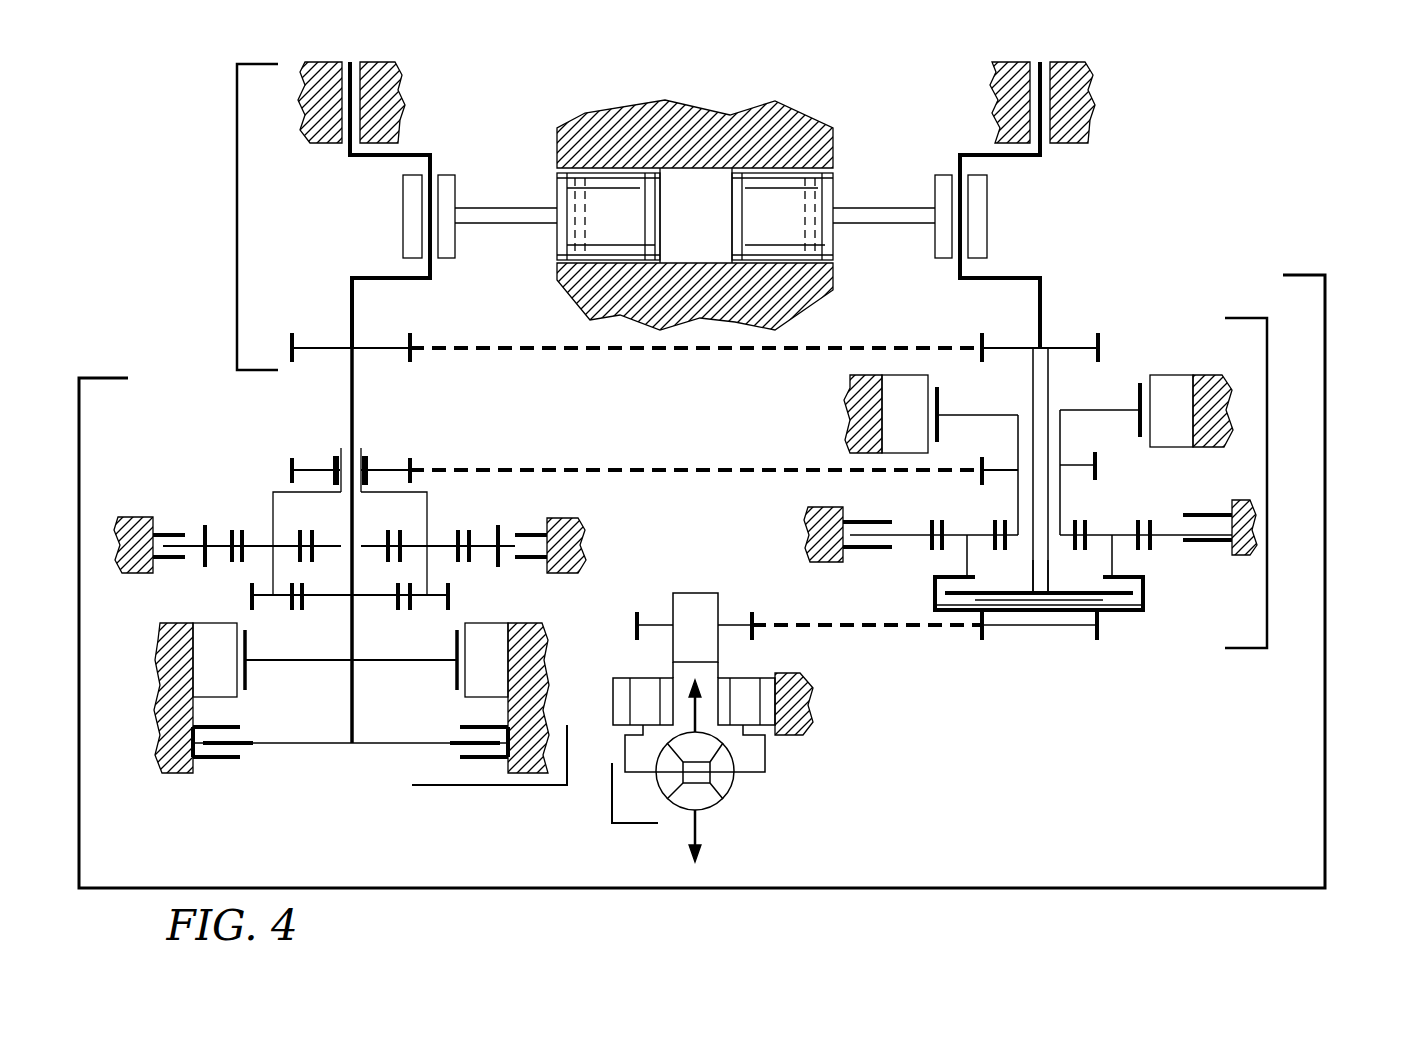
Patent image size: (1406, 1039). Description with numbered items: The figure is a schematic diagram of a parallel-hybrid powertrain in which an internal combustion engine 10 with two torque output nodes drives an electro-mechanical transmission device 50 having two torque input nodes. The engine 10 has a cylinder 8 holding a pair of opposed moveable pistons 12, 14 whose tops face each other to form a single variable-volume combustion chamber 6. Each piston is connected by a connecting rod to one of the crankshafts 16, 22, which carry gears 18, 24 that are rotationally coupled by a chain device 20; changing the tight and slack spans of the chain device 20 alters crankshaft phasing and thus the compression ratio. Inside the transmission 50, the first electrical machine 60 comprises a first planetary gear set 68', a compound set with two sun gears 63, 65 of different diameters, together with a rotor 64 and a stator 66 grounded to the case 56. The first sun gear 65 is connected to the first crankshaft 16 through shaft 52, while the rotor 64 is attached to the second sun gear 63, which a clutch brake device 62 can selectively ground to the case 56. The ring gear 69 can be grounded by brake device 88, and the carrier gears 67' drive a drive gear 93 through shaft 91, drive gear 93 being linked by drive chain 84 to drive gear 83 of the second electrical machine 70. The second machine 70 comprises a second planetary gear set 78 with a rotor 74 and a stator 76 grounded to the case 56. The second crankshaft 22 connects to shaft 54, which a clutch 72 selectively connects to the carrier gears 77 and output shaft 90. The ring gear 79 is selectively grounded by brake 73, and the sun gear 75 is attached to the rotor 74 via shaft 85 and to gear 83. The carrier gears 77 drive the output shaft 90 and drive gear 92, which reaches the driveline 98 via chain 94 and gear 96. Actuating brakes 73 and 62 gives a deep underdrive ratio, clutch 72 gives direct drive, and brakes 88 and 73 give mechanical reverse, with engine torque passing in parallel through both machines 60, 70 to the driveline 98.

The combustion chamber 6 is at (702, 198).
The cylinder 8 is at (695, 182).
The internal combustion engine 10 is at (237, 290).
The moveable piston 12 is at (613, 185).
The moveable piston 14 is at (773, 188).
The first crankshaft 16 is at (360, 100).
The gear 18 is at (325, 345).
The chain device 20 is at (525, 345).
The second crankshaft 22 is at (1050, 102).
The gear 24 is at (1060, 345).
The electro-mechanical transmission device 50 is at (1325, 545).
The shaft 52 is at (340, 432).
The shaft 54 is at (1042, 410).
The case 56 is at (173, 760).
The first electrical machine 60 is at (545, 790).
The clutch brake device 62 is at (230, 748).
The second sun gear 63 is at (368, 598).
The rotor 64 is at (250, 670).
The first sun gear 65 is at (367, 548).
The stator 66 is at (215, 685).
The carrier gears 67' is at (471, 522).
The first planetary gear set 68' is at (283, 570).
The ring gear 69 is at (482, 540).
The second electrical machine 70 is at (1267, 555).
The clutch 72 is at (963, 585).
The brake 73 is at (1200, 527).
The rotor 74 is at (1123, 395).
The sun gear 75 is at (1063, 540).
The stator 76 is at (1165, 390).
The carrier gears 77 is at (975, 530).
The second planetary gear set 78 is at (1148, 572).
The ring gear 79 is at (910, 530).
The drive gear 83 is at (1070, 465).
The drive chain 84 is at (657, 465).
The shaft 85 is at (1015, 452).
The brake device 88 is at (172, 535).
The output shaft 90 is at (1110, 612).
The shaft 91 is at (340, 448).
The drive gear 92 is at (1018, 627).
The drive gear 93 is at (375, 458).
The chain 94 is at (858, 628).
The gear 96 is at (655, 628).
The driveline 98 is at (694, 739).